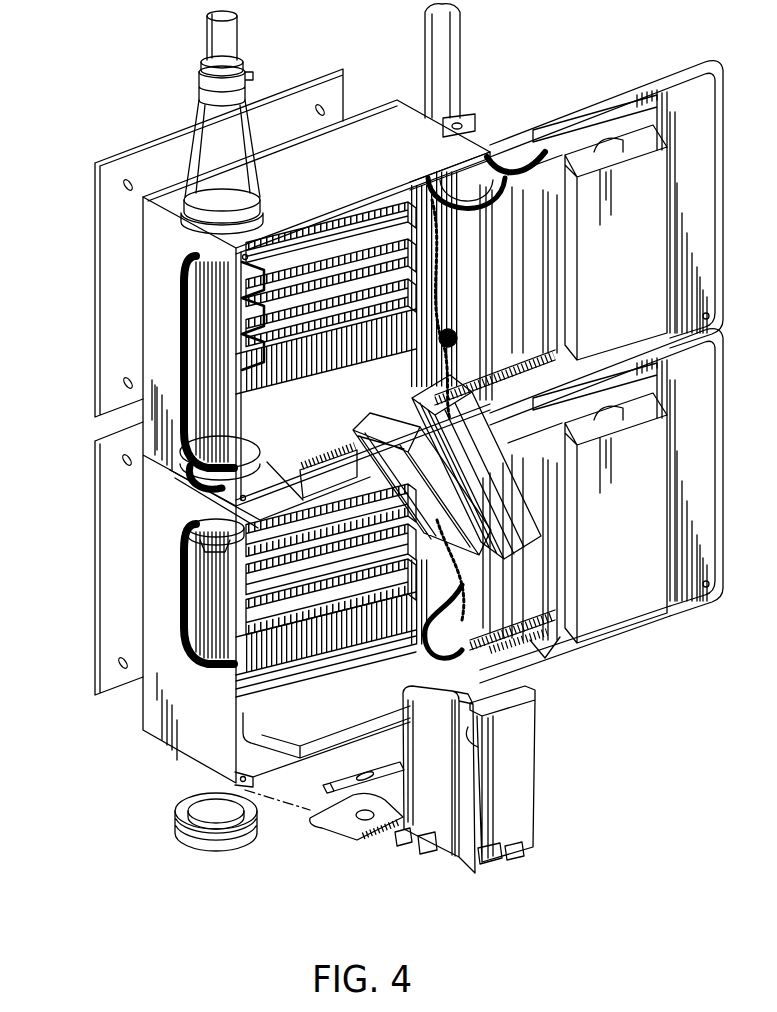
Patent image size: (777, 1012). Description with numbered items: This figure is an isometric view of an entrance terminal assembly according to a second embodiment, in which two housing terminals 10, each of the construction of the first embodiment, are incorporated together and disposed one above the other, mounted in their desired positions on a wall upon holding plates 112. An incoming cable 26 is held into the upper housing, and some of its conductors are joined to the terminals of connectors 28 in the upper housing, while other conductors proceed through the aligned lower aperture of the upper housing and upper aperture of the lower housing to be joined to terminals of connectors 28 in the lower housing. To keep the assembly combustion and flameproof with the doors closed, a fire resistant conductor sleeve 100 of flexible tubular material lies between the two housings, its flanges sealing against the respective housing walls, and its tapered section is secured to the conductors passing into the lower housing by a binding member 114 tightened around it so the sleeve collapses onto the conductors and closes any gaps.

The housing terminal 10 is at (380, 97).
The incoming cable 26 is at (247, 34).
The connectors 28 is at (342, 258).
The fire resistant conductor sleeve 100 is at (253, 470).
The holding plates 112 is at (97, 258).
The binding member 114 is at (183, 562).